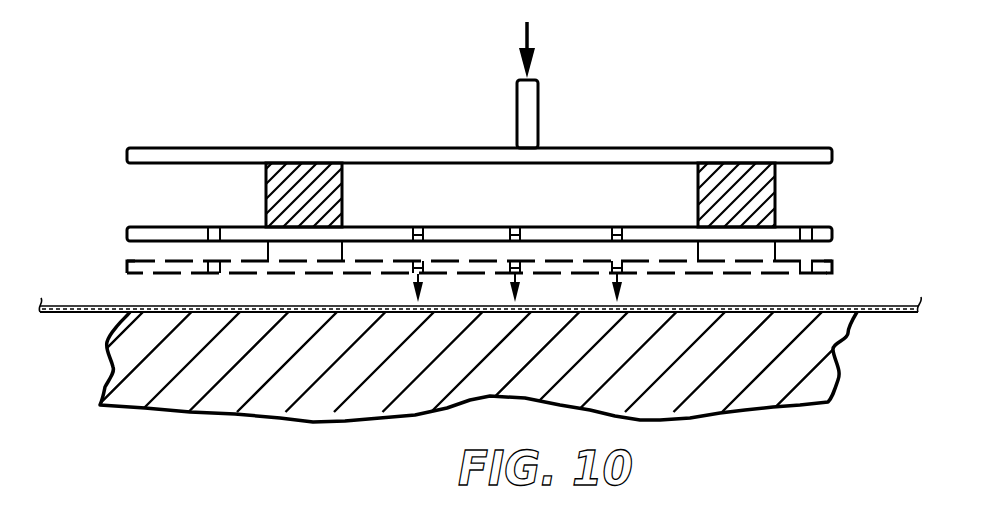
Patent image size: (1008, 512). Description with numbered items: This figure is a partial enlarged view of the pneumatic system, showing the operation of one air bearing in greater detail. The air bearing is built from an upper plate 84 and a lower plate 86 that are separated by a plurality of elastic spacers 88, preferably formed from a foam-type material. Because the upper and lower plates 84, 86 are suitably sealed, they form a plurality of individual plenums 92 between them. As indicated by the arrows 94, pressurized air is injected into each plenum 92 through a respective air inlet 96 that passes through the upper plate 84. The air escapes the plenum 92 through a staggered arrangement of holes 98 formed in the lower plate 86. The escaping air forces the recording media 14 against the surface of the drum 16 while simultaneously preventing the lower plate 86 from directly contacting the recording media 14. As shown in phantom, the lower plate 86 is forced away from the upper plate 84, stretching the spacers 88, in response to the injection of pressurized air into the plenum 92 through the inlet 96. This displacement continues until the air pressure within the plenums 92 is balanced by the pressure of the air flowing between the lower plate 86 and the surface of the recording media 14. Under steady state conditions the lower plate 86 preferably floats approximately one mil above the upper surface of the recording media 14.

The recording media 14 is at (108, 306).
The drum 16 is at (785, 353).
The upper plate 84 is at (815, 150).
The lower plate 86 is at (820, 227).
The elastic spacers 88 is at (737, 178).
The plenum 92 is at (479, 207).
The arrows 94 is at (527, 30).
The air inlet 96 is at (531, 95).
The holes 98 is at (515, 228).